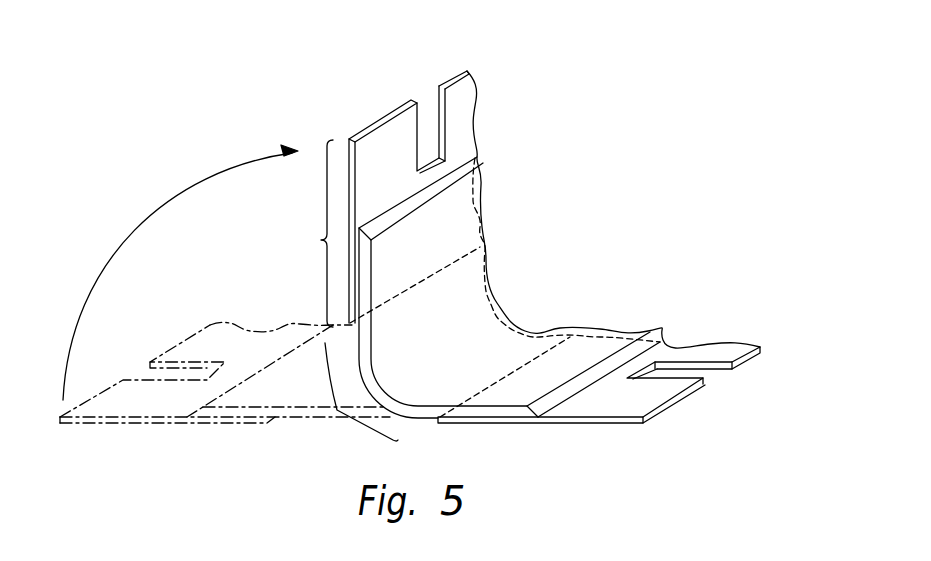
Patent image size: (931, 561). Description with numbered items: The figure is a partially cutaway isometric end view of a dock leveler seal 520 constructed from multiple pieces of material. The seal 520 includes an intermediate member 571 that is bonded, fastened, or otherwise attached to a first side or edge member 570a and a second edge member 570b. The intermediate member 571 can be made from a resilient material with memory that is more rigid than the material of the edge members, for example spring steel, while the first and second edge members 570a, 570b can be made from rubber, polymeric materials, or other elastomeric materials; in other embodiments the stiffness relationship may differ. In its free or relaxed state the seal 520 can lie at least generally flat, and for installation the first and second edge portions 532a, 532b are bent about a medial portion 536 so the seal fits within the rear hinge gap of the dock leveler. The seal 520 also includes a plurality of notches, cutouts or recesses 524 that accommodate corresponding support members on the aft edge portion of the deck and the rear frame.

The seal 520 is at (645, 238).
The notches 524 is at (421, 122).
The first edge portion 532a is at (438, 432).
The second edge portion 532b is at (321, 240).
The medial portion 536 is at (337, 410).
The first edge member 570a is at (463, 100).
The second edge member 570b is at (698, 345).
The intermediate member 571 is at (467, 220).